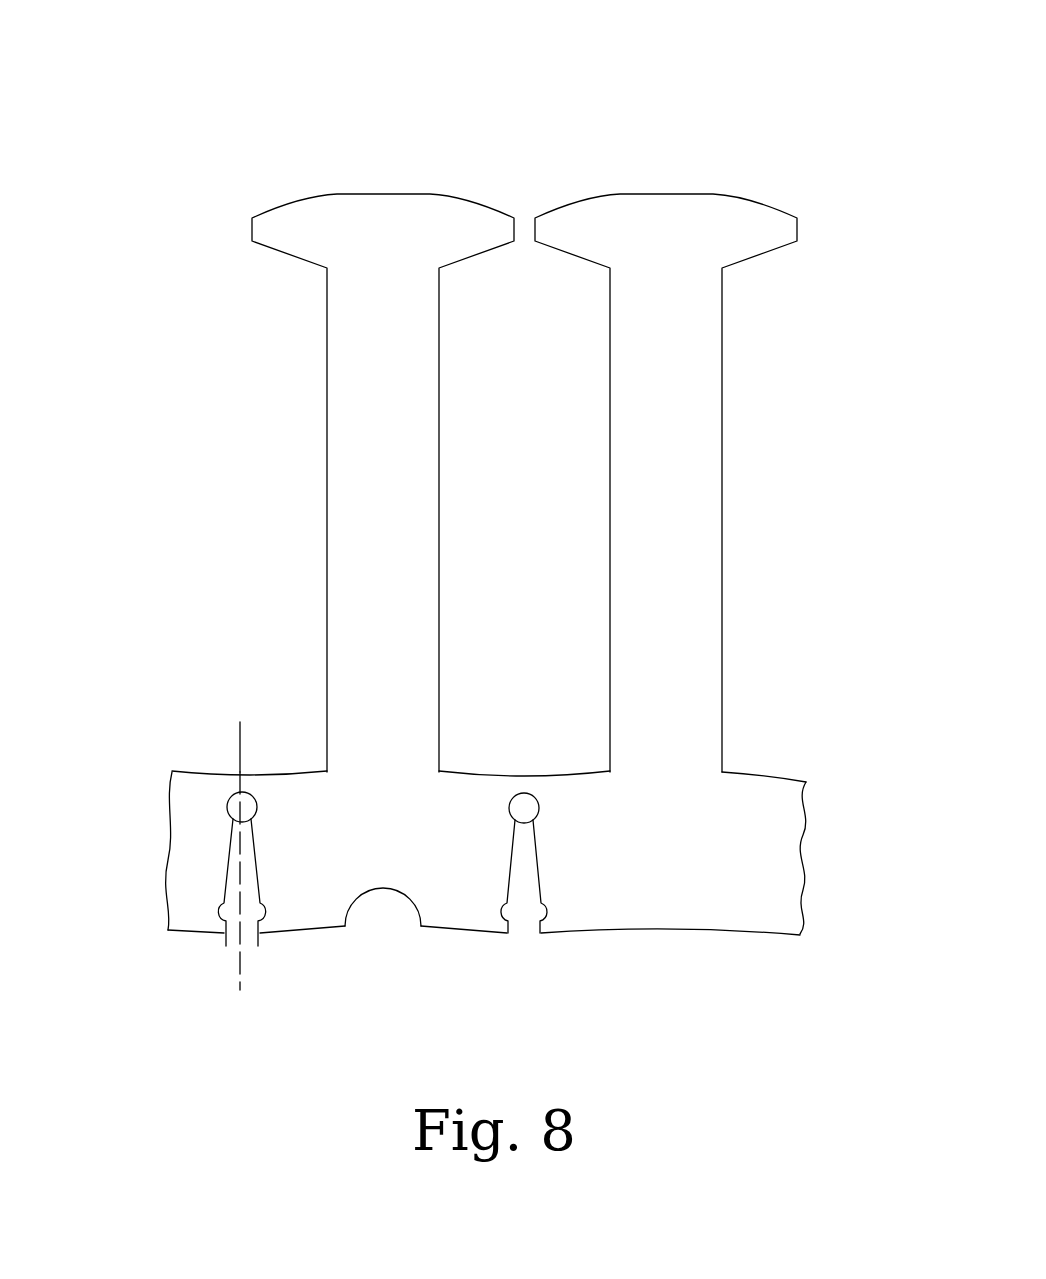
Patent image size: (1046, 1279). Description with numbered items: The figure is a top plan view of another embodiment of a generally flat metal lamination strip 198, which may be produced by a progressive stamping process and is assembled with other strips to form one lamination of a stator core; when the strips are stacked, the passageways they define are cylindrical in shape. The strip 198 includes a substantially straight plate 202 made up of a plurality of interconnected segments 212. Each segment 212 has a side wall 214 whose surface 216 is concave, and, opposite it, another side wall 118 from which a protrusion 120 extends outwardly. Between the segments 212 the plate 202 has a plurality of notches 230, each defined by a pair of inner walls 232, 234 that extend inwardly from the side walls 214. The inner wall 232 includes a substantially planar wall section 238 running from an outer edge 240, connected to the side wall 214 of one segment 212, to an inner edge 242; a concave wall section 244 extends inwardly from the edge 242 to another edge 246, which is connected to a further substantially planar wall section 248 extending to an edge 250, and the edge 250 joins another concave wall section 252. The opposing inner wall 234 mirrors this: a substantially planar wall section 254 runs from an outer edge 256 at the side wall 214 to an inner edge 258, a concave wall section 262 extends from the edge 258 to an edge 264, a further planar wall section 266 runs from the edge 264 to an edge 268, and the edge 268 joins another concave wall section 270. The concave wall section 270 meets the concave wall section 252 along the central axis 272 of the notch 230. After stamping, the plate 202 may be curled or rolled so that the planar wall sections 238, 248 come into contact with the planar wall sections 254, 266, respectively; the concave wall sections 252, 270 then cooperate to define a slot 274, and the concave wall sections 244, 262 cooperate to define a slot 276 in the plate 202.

The lamination strip 198 is at (648, 119).
The protrusion 120 is at (418, 473).
The side wall 118 is at (268, 772).
The plate 202 is at (775, 790).
The segment 212 is at (190, 931).
The side wall 214 is at (302, 934).
The surface 216 is at (640, 928).
The notch 230 is at (242, 996).
The inner wall 232 is at (256, 868).
The inner wall 234 is at (228, 868).
The planar wall section 238 is at (256, 940).
The outer edge 240 is at (260, 936).
The inner edge 242 is at (271, 915).
The concave wall section 244 is at (265, 905).
The edge 246 is at (259, 893).
The planar wall section 248 is at (254, 848).
The edge 250 is at (257, 808).
The concave wall section 252 is at (255, 796).
The planar wall section 254 is at (228, 940).
The outer edge 256 is at (228, 934).
The inner edge 258 is at (180, 929).
The concave wall section 262 is at (210, 910).
The edge 264 is at (224, 901).
The planar wall section 266 is at (230, 846).
The edge 268 is at (232, 825).
The concave wall section 270 is at (230, 793).
The central axis 272 is at (240, 744).
The slot 274 is at (545, 803).
The slot 276 is at (568, 908).